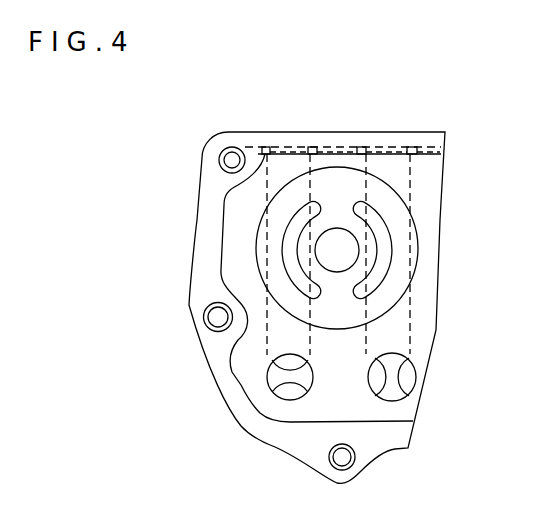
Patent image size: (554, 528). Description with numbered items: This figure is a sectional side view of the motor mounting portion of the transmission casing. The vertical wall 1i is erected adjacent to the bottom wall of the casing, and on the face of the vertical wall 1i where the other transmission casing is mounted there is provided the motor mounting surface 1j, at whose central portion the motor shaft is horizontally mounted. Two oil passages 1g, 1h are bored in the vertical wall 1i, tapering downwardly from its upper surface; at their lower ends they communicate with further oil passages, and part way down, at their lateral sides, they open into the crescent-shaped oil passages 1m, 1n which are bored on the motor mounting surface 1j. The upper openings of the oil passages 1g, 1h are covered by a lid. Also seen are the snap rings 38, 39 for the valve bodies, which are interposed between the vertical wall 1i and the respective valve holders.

The oil passage 1g is at (268, 171).
The vertical wall 1i is at (430, 193).
The crescent-shaped oil passage 1m is at (287, 246).
The crescent-shaped oil passage 1n is at (392, 255).
The motor mounting surface 1j is at (344, 324).
The oil passage 1h is at (402, 333).
The snap ring 38 is at (270, 383).
The snap ring 39 is at (393, 400).